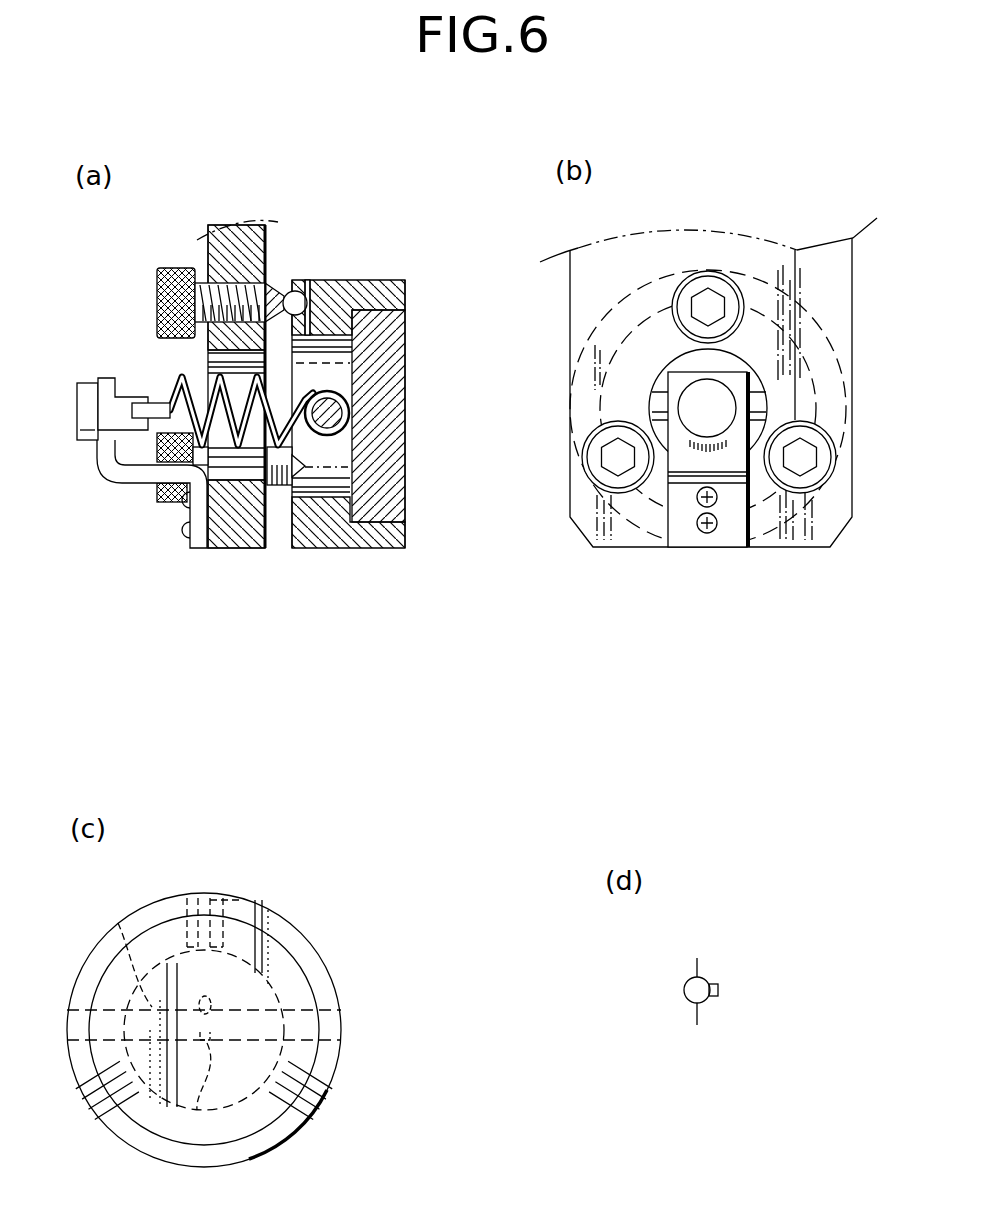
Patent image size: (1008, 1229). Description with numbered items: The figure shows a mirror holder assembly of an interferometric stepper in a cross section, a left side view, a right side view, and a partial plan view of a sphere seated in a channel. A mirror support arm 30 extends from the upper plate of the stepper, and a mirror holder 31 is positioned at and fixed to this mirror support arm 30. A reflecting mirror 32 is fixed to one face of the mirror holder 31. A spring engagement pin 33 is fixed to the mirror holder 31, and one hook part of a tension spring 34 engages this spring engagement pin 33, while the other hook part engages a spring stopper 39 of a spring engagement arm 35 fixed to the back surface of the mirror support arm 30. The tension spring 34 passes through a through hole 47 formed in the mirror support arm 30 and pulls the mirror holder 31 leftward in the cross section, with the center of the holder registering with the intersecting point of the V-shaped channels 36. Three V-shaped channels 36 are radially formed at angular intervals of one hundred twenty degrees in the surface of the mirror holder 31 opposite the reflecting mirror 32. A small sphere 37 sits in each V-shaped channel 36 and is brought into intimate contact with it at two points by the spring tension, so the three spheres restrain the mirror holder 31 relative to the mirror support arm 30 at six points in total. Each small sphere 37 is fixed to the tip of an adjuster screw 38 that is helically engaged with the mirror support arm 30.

The mirror support arm 30 is at (218, 252).
The mirror holder 31 is at (386, 290).
The reflecting mirror 32 is at (394, 398).
The spring engagement pin 33 is at (340, 418).
The tension spring 34 is at (185, 380).
The spring engagement arm 35 is at (125, 478).
The V-shaped channel 36 is at (300, 295).
The small sphere 37 is at (328, 298).
The adjuster screw 38 is at (278, 290).
The spring stopper 39 is at (87, 390).
The through hole 47 is at (240, 507).